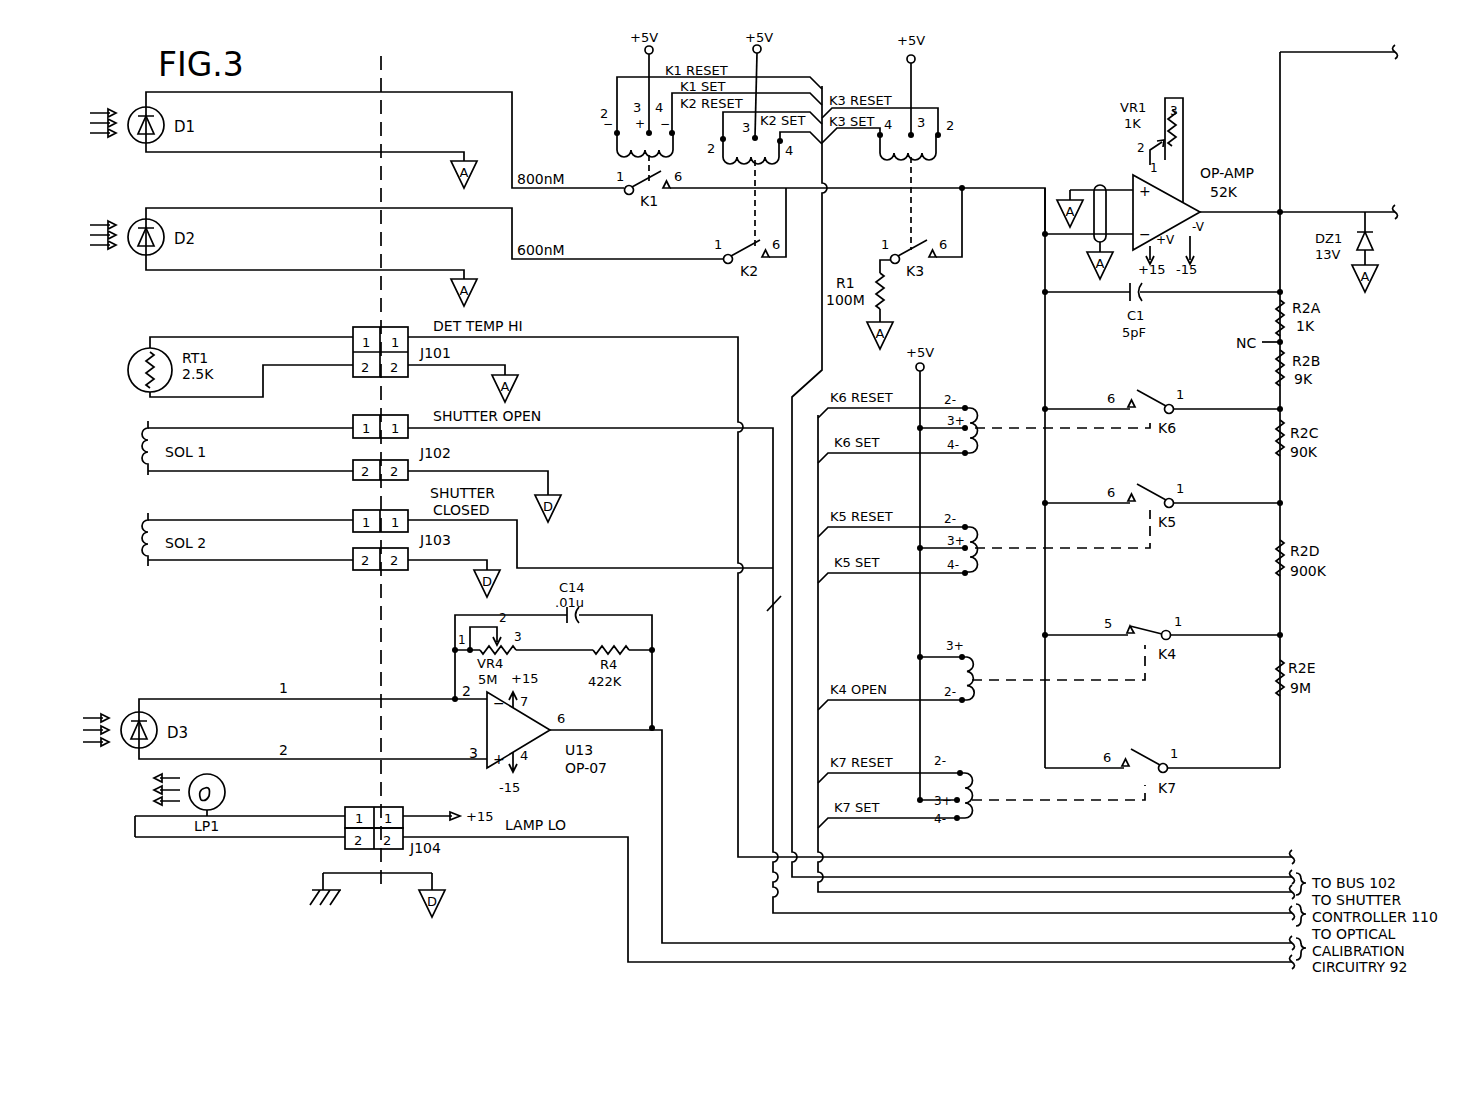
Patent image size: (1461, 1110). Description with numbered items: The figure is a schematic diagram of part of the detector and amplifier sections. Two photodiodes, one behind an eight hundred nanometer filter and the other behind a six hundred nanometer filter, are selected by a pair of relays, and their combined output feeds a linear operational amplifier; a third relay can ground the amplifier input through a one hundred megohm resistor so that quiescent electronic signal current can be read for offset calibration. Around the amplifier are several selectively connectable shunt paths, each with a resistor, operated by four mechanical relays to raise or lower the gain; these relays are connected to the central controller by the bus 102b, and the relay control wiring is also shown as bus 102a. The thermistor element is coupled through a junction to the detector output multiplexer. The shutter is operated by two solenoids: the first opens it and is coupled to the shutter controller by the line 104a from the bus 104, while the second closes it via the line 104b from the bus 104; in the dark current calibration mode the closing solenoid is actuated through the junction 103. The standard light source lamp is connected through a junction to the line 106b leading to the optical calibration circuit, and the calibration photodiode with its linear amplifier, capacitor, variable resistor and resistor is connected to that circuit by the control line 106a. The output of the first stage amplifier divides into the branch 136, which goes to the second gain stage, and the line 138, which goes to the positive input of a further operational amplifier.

The relay control bus lines 102a is at (822, 317).
The bus 102b is at (818, 629).
The junction 103 is at (1222, 857).
The bus 104 is at (851, 642).
The line 104a is at (642, 426).
The line 104b is at (642, 567).
The control line 106a is at (626, 919).
The line 106b is at (662, 889).
The branch 136 is at (1282, 114).
The line 138 is at (1344, 212).